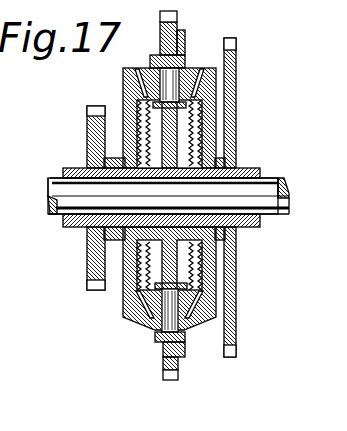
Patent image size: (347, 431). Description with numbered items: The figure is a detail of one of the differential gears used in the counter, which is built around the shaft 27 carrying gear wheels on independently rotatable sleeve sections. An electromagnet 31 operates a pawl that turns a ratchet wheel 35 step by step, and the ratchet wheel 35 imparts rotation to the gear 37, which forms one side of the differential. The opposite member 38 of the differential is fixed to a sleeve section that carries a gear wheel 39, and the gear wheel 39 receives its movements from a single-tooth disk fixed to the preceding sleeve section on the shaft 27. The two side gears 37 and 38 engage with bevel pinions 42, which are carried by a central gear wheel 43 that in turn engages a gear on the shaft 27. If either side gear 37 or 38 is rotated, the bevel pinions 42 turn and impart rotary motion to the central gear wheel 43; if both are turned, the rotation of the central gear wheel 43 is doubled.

The shaft 27 is at (268, 214).
The electromagnet 31 is at (130, 245).
The ratchet wheel 35 is at (123, 298).
The gear 37 is at (121, 89).
The opposite member of the differential gear 38 is at (210, 70).
The gear wheel 39 is at (238, 108).
The bevel pinion 42 is at (152, 327).
The central gear wheel 43 is at (181, 379).